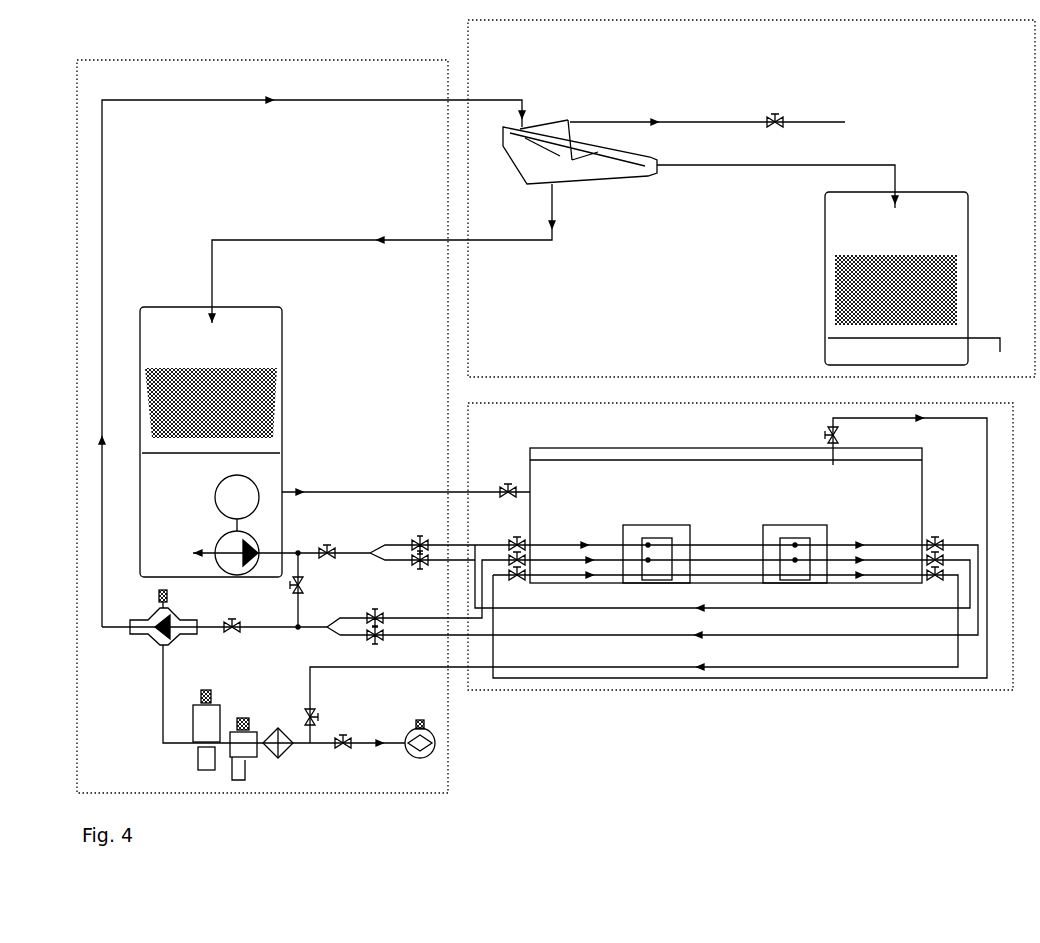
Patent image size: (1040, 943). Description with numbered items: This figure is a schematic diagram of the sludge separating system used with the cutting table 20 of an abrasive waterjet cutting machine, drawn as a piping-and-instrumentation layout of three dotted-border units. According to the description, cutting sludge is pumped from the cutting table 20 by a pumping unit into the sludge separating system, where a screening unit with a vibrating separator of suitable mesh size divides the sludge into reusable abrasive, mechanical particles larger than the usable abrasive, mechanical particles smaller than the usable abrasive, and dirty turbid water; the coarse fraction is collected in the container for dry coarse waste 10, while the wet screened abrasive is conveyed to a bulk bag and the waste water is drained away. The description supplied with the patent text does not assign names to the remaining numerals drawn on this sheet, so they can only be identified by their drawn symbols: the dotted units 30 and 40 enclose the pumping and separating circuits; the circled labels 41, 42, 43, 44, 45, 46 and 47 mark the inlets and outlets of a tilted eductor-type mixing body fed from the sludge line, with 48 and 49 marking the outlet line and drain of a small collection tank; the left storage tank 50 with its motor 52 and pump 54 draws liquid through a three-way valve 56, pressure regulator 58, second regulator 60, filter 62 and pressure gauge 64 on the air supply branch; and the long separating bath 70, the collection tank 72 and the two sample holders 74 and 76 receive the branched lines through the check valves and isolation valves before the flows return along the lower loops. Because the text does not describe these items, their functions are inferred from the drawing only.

The container for dry coarse waste 10 is at (262, 426).
The cutting table 20 is at (751, 198).
The treatment bath unit 30 is at (740, 546).
The eductor 40 is at (580, 152).
The inlet port 41 is at (522, 100).
The air inlet 42 is at (590, 122).
The outlet 43 is at (675, 165).
The port 44 is at (508, 158).
The port 45 is at (522, 178).
The liquid outlet 46 is at (552, 212).
The air source 47 is at (855, 121).
The air line 48 is at (895, 218).
The drain 49 is at (1000, 363).
The storage tank 50 is at (211, 442).
The motor 52 is at (237, 503).
The pump 54 is at (237, 553).
The three-way valve 56 is at (163, 617).
The pressure regulator 58 is at (206, 730).
The regulator 60 is at (243, 749).
The filter 62 is at (278, 743).
The pressure gauge 64 is at (420, 730).
The bath 70 is at (726, 515).
The collection tank 72 is at (912, 278).
The sample holder 74 is at (656, 554).
The sample holder 76 is at (795, 554).